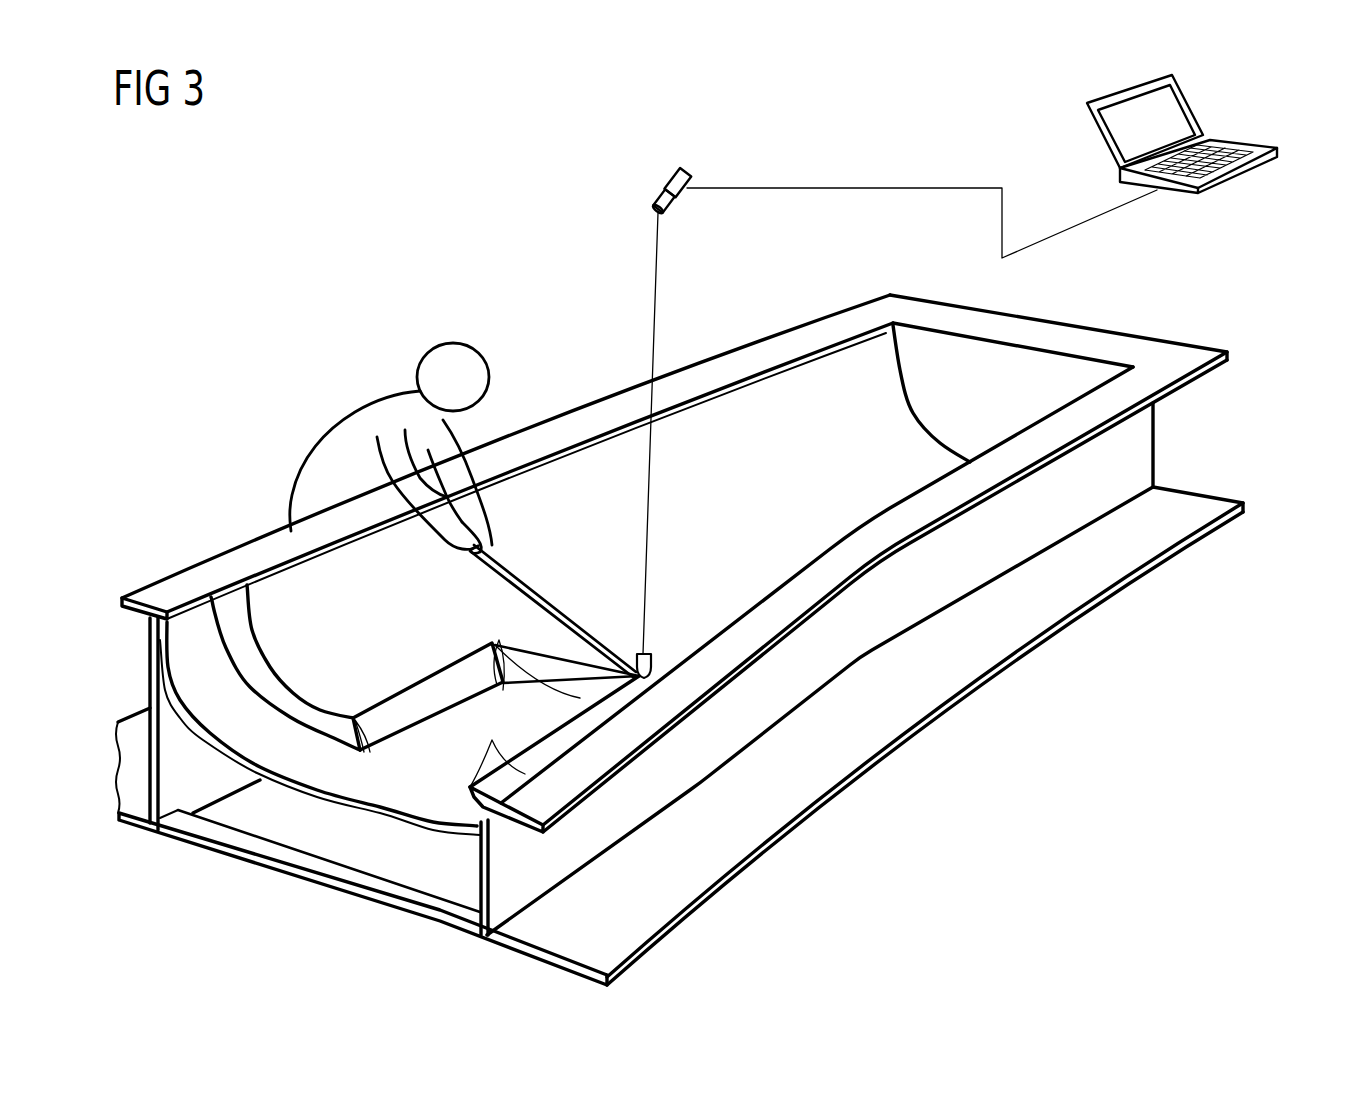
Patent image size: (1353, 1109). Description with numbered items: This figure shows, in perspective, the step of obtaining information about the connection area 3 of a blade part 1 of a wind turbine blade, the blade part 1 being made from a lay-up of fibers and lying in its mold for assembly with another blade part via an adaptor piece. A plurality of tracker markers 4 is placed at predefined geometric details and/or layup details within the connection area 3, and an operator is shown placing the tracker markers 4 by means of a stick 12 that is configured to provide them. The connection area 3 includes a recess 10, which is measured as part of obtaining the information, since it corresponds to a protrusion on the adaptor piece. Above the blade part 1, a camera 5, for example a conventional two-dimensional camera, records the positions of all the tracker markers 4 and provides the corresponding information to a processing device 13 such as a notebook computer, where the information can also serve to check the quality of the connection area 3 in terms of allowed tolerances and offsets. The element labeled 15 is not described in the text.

The blade part 1 is at (613, 480).
The connection area 3 is at (337, 708).
The tracker markers 4 is at (499, 640).
The camera 5 is at (662, 177).
The recess 10 is at (456, 749).
The stick 12 is at (545, 598).
The processing device 13 is at (1236, 173).
The top plate 15 is at (1177, 357).